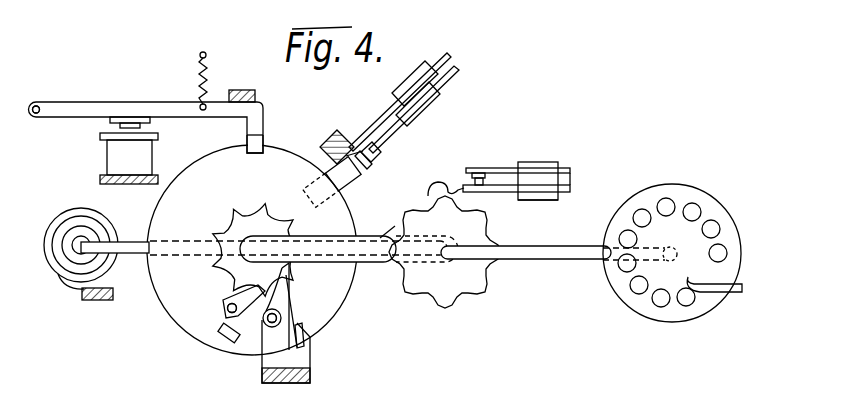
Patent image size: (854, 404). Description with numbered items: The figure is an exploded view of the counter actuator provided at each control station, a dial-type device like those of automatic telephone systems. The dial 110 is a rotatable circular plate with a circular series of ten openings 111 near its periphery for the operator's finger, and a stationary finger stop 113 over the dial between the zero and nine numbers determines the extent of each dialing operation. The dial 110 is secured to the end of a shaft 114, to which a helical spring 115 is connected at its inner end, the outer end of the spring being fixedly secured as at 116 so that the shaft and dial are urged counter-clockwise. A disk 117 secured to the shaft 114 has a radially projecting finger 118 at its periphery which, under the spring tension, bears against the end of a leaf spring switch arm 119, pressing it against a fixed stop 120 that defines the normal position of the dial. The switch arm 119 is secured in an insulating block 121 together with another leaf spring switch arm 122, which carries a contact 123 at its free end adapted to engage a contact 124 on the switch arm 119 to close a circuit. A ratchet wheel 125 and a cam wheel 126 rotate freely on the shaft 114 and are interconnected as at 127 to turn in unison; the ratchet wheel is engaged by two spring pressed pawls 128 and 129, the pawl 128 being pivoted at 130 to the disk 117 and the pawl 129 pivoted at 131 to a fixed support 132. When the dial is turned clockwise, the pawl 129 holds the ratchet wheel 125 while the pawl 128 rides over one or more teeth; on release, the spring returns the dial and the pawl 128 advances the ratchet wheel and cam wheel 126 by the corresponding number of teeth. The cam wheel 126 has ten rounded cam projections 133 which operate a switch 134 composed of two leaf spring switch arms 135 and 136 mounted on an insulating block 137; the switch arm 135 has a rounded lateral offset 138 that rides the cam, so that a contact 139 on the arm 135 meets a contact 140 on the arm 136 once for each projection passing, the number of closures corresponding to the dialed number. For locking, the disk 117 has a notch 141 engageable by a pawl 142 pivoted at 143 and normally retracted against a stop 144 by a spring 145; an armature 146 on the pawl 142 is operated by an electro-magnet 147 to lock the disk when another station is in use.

The dial 110 is at (633, 314).
The openings 111 is at (672, 199).
The finger stop 113 is at (712, 284).
The shaft 114 is at (551, 259).
The helical spring 115 is at (50, 228).
The fixed securing point of spring 116 is at (86, 301).
The disk 117 is at (170, 300).
The radially projecting finger 118 is at (352, 183).
The leaf spring switch arm 119 is at (378, 98).
The fixed stop 120 is at (330, 136).
The insulating block 121 is at (462, 64).
The leaf spring switch arm 122 is at (412, 133).
The contact 123 is at (378, 151).
The contact 124 is at (362, 164).
The ratchet wheel 125 is at (215, 228).
The cam wheel 126 is at (444, 294).
The interconnection 127 is at (384, 266).
The pawl 128 is at (225, 299).
The pawl 129 is at (290, 283).
The pivot 130 is at (229, 311).
The pivot 131 is at (264, 325).
The fixed support 132 is at (311, 371).
The cam projections 133 is at (491, 324).
The switch 134 is at (560, 161).
The leaf spring switch arm 135 is at (512, 195).
The leaf spring switch arm 136 is at (558, 134).
The insulating block 137 is at (572, 186).
The rounded lateral offset 138 is at (429, 191).
The contact 139 is at (490, 183).
The contact 140 is at (466, 168).
The notch 141 is at (257, 143).
The pawl 142 is at (145, 85).
The pivot 143 is at (36, 102).
The stop 144 is at (244, 90).
The spring 145 is at (200, 60).
The armature 146 is at (110, 123).
The electro-magnet 147 is at (115, 157).